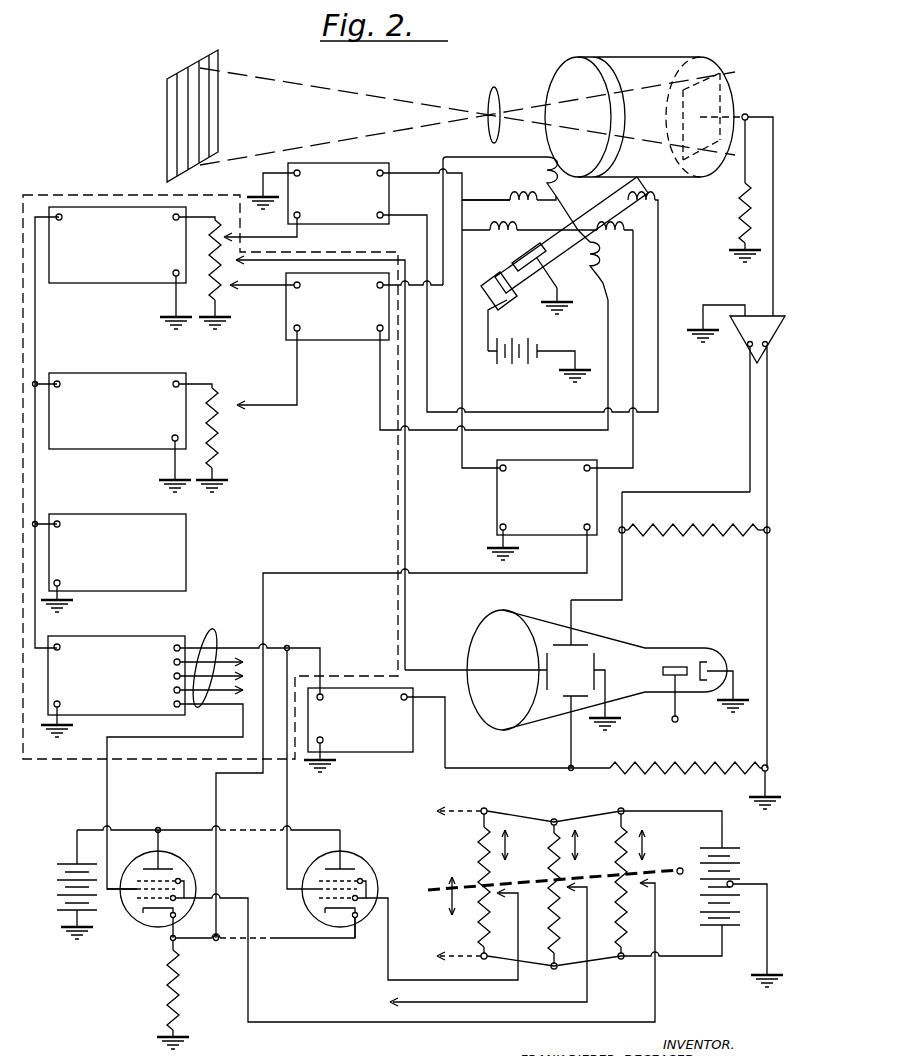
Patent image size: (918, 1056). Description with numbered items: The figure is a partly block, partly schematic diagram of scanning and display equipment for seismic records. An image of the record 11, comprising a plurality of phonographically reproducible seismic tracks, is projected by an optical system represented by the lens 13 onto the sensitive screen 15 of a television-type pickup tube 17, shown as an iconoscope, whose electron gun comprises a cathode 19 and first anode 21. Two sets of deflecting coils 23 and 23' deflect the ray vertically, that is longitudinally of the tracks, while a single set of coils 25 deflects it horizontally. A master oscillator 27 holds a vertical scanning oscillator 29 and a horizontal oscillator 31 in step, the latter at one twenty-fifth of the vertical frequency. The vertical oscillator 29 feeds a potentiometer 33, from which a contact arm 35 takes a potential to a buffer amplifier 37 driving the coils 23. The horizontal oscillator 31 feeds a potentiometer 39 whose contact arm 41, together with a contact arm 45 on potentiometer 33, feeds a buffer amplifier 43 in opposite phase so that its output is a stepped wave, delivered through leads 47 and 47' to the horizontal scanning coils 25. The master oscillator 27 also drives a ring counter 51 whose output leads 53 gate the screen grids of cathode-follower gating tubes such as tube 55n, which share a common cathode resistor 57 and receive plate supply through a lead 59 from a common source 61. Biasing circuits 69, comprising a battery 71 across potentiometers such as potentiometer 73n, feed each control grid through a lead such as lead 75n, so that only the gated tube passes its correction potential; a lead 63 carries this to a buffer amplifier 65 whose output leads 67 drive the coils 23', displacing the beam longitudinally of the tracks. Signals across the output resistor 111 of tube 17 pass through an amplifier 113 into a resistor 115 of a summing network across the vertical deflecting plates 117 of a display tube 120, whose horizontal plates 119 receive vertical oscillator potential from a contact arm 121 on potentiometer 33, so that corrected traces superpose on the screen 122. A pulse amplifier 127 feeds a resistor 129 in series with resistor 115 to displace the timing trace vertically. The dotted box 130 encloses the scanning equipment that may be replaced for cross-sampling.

The record 11 is at (167, 108).
The lens 13 is at (491, 90).
The sensitive screen 15 is at (724, 80).
The pickup tube 17 is at (568, 70).
The cathode 19 is at (503, 276).
The first anode 21 is at (546, 259).
The deflecting coils 23 is at (536, 302).
The second set of deflecting coils 23' is at (594, 236).
The horizontal scanning coils 25 is at (540, 174).
The master oscillator 27 is at (182, 543).
The vertical scanning oscillator 29 is at (130, 283).
The horizontal oscillator 31 is at (143, 373).
The potentiometer 33 is at (208, 274).
The contact arm 35 is at (262, 237).
The buffer amplifier 37 is at (347, 224).
The potentiometer 39 is at (220, 446).
The contact arm 41 is at (270, 410).
The buffer amplifier 43 is at (345, 340).
The contact arm 45 is at (262, 295).
The lead 47 is at (475, 221).
The lead 47' is at (494, 371).
The ring counter 51 is at (137, 636).
The output leads 53 is at (213, 648).
The gating tube 55n is at (306, 917).
The common cathode resistor 57 is at (166, 989).
The lead 59 is at (302, 820).
The common source 61 is at (57, 880).
The lead 63 is at (214, 813).
The buffer amplifier 65 is at (497, 505).
The output leads 67 is at (468, 465).
The biasing circuits 69 is at (690, 848).
The battery 71 is at (735, 866).
The potentiometer 73n is at (482, 925).
The lead 75n is at (393, 973).
The output resistor 111 is at (735, 218).
The amplifier 113 is at (746, 333).
The resistor 115 is at (702, 533).
The vertical deflecting plates 117 is at (586, 646).
The horizontal deflecting plates 119 is at (513, 691).
The cathode ray display tube 120 is at (647, 694).
The contact arm 121 is at (320, 463).
The screen 122 is at (503, 729).
The pulse amplifier 127 is at (368, 752).
The resistor 129 is at (680, 776).
The dotted box 130 is at (110, 196).